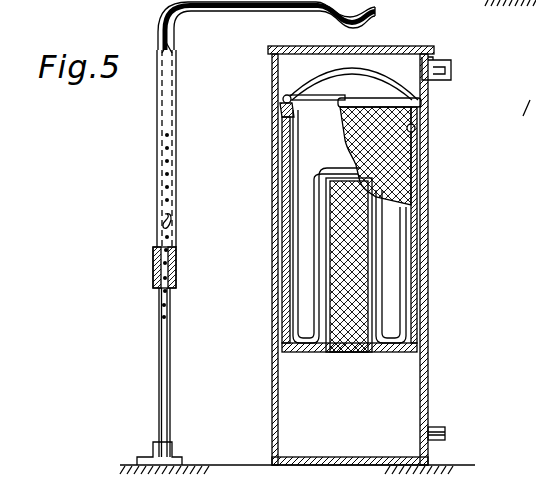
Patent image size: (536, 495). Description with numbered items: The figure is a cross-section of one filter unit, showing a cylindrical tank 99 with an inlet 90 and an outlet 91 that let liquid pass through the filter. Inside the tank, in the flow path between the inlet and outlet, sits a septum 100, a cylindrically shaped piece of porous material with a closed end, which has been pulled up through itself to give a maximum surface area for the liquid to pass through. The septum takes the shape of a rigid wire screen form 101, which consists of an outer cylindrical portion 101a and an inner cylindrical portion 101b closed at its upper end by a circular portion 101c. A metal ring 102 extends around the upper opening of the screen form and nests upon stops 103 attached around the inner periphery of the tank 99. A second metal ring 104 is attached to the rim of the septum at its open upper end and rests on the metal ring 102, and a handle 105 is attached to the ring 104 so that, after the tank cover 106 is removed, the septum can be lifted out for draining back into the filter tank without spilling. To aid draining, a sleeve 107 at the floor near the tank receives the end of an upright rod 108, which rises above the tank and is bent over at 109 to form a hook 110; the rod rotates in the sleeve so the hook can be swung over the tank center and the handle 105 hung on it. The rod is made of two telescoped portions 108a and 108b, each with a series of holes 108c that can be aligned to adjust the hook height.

The inlet 90 is at (441, 61).
The outlet 91 is at (441, 427).
The cylindrical tank 99 is at (272, 405).
The septum 100 is at (300, 247).
The wire screen form 101 is at (343, 256).
The outer cylindrical portion 101a is at (278, 297).
The inner cylindrical portion 101b is at (340, 352).
The circular portion 101c is at (313, 176).
The metal ring 102 is at (280, 108).
The stops 103 is at (416, 131).
The metal ring 104 is at (282, 98).
The handle 105 is at (341, 68).
The tank cover 106 is at (293, 29).
The sleeve 107 is at (176, 455).
The upright rod 108 is at (150, 250).
The telescoped portion 108a is at (172, 223).
The telescoped portion 108b is at (157, 106).
The holes 108c is at (156, 242).
The bend 109 is at (251, 12).
The hook 110 is at (377, 12).